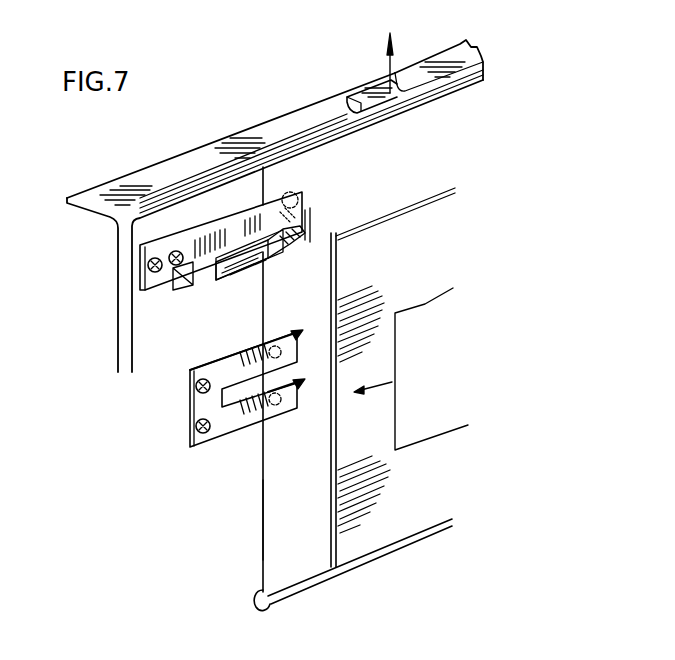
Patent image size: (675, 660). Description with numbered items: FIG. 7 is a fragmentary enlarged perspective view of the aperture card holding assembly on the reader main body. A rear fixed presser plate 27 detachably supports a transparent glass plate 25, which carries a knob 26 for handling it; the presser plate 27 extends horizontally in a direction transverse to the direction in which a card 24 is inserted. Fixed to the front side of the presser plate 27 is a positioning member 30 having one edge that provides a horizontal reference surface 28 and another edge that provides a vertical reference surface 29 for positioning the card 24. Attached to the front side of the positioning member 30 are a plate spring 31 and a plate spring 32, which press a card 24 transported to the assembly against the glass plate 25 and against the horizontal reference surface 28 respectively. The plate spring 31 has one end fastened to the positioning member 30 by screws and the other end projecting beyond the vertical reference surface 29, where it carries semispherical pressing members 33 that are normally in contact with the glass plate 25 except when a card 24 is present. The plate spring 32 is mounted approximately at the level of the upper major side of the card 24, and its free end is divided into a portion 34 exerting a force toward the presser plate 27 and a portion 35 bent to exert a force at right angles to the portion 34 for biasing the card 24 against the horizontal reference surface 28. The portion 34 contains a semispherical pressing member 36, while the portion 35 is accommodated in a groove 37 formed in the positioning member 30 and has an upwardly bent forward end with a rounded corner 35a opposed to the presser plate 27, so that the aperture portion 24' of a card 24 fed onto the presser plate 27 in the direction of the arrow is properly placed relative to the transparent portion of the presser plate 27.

The card 24 is at (393, 377).
The aperture portion 24' is at (430, 351).
The transparent glass plate 25 is at (312, 525).
The knob 26 is at (373, 92).
The rear fixed presser plate 27 is at (117, 289).
The horizontal reference surface 28 is at (305, 585).
The vertical reference surface 29 is at (264, 506).
The positioning member 30 is at (222, 597).
The plate spring 31 is at (193, 447).
The plate spring 32 is at (163, 288).
The semispherical pressing members 33 is at (277, 406).
The portion 34 is at (306, 191).
The portion 35 is at (273, 258).
The rounded corner 35a is at (307, 215).
The semispherical pressing member 36 is at (298, 186).
The groove 37 is at (183, 292).